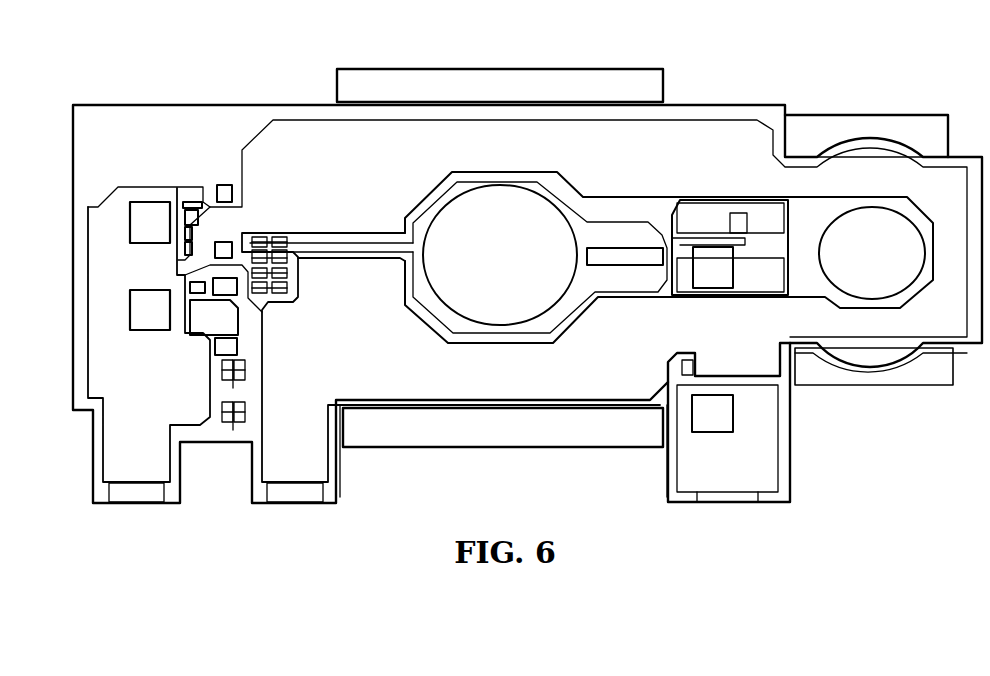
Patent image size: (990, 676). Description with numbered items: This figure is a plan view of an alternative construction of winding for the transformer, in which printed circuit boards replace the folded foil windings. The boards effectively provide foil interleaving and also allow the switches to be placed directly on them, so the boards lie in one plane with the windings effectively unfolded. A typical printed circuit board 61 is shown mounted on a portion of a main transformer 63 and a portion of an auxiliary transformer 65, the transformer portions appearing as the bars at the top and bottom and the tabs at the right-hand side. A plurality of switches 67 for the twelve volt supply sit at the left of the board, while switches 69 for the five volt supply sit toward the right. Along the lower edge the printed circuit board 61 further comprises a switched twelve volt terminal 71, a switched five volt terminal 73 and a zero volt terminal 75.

The printed circuit board 61 is at (258, 70).
The main transformer 63 is at (497, 78).
The auxiliary transformer 65 is at (867, 123).
The switches 67 is at (150, 208).
The switches 69 is at (713, 283).
The switched 12V terminal 71 is at (137, 492).
The switched 5V terminal 73 is at (728, 496).
The 0V terminal 75 is at (296, 492).